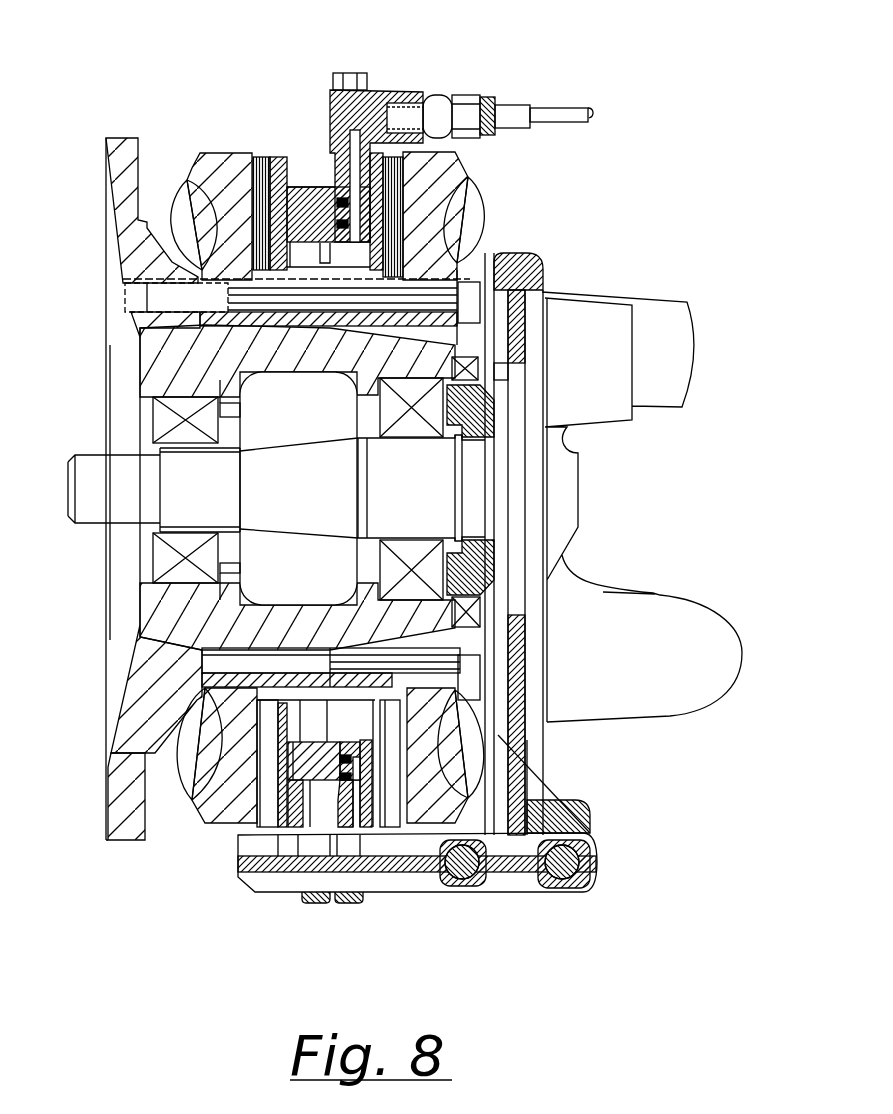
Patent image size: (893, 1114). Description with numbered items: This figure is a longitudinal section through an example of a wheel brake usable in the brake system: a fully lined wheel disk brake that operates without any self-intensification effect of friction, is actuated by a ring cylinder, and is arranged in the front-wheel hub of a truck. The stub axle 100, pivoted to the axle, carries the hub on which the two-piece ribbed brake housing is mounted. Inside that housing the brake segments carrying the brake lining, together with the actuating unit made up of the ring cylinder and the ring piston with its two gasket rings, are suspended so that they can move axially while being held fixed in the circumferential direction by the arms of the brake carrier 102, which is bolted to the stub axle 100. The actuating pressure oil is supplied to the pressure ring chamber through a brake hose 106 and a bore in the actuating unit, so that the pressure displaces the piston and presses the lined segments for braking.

The stub axle 100 is at (560, 505).
The brake carrier 102 is at (537, 800).
The brake hose 106 is at (550, 110).